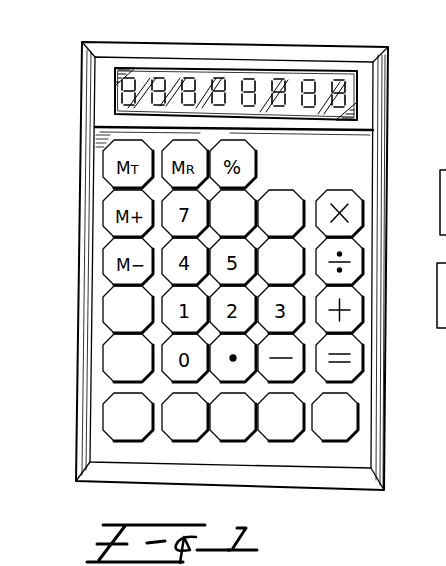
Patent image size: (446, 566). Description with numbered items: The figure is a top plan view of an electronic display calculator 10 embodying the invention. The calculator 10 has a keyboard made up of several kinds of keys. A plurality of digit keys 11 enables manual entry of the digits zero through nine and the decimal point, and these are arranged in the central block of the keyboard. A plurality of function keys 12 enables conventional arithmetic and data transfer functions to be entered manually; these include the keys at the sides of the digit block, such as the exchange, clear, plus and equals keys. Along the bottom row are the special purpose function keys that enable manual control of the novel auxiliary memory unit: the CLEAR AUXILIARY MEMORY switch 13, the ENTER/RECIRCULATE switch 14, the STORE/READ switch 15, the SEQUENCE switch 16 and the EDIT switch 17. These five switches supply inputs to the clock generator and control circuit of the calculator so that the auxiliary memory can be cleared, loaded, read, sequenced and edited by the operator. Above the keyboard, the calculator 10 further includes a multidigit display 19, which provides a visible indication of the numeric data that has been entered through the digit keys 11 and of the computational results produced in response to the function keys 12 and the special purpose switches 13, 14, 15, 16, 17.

The electronic display calculator 10 is at (184, 38).
The multidigit display 19 is at (248, 116).
The digit keys 11 is at (276, 250).
The function keys 12 is at (118, 352).
The SEQUENCE switch 16 is at (104, 430).
The STORE/READ switch 15 is at (176, 441).
The CLEAR AUXILIARY MEMORY switch 13 is at (222, 441).
The ENTER/RECIRCULATE switch 14 is at (281, 441).
The EDIT switch 17 is at (338, 441).